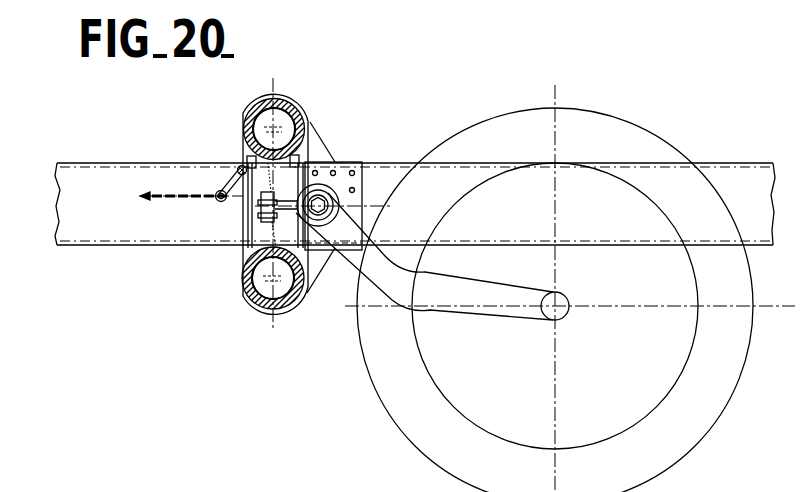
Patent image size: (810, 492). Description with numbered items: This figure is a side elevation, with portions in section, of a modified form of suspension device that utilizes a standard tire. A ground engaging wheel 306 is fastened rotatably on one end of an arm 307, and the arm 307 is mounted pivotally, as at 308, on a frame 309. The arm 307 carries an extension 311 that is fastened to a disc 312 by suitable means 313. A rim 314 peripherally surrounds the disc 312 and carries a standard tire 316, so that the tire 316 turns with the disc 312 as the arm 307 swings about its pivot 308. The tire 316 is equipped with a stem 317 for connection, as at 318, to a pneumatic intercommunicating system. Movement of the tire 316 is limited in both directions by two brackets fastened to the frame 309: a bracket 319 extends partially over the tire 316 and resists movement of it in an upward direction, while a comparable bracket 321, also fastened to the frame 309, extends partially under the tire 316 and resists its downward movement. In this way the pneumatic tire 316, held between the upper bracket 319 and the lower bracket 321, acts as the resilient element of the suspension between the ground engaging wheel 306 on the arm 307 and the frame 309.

The ground engaging wheel 306 is at (643, 138).
The arm 307 is at (491, 313).
The pivot mounting 308 is at (338, 200).
The frame 309 is at (100, 246).
The extension 311 is at (261, 211).
The disc 312 is at (262, 238).
The fastening means 313 is at (262, 207).
The rim 314 is at (322, 161).
The standard tire 316 is at (287, 108).
The stem 317 is at (241, 166).
The connection 318 is at (239, 172).
The bracket 319 is at (305, 130).
The bracket 321 is at (296, 305).